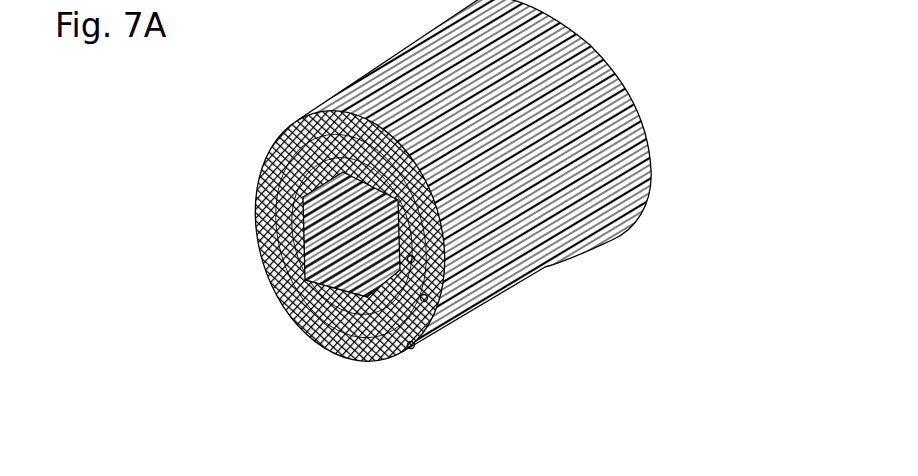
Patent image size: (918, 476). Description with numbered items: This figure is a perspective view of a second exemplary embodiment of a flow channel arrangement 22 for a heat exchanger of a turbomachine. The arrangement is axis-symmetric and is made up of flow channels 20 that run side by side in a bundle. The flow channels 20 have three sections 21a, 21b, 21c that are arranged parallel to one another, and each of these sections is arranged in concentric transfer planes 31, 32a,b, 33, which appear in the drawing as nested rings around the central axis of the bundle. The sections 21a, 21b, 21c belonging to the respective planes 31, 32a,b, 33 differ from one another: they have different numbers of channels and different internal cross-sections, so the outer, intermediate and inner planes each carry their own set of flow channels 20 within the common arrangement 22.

The flow channels 20 is at (367, 93).
The first section 21a is at (417, 258).
The second section 21b is at (430, 297).
The third section 21c is at (417, 345).
The flow channel arrangement 22 is at (672, 84).
The transfer plane 31 is at (282, 200).
The transfer planes 32a,b is at (272, 253).
The transfer plane 33 is at (288, 295).